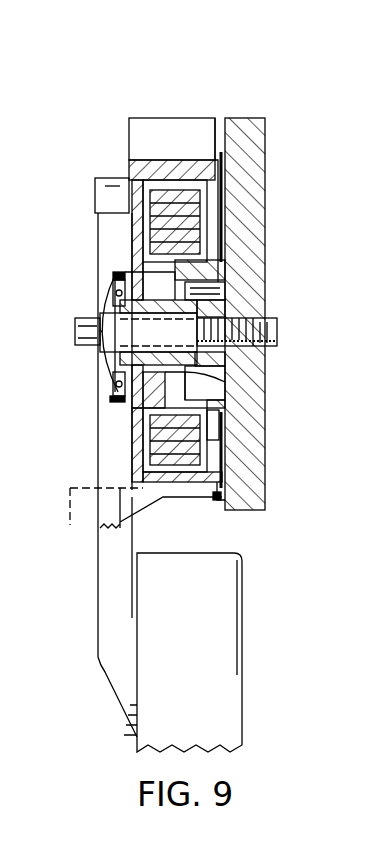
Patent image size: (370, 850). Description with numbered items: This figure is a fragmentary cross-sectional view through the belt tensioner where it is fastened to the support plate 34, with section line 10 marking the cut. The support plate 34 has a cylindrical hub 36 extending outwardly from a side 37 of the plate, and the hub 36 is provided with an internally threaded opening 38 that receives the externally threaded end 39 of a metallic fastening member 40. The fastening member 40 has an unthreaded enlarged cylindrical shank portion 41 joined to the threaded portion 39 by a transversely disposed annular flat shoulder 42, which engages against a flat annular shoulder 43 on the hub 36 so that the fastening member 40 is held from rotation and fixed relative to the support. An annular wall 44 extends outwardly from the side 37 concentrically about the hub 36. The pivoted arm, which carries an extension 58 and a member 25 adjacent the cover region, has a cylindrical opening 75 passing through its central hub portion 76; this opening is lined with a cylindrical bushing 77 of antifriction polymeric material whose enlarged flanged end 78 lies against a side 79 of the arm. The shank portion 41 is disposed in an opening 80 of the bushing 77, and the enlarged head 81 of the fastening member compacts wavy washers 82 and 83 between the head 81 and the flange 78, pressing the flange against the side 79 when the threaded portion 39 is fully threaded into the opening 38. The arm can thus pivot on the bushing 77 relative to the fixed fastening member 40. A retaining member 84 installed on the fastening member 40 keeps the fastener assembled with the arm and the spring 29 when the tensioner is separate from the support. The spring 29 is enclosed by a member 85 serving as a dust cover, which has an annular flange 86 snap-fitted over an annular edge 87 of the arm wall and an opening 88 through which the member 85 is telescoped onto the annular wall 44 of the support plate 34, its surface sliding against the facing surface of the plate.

The section line 10 is at (139, 147).
The support arm 25 is at (226, 703).
The spring 29 is at (150, 451).
The support plate 34 is at (255, 118).
The cylindrical hub 36 is at (255, 380).
The side of the plate 37 is at (222, 125).
The internally threaded opening 38 is at (279, 331).
The externally threaded end 39 is at (265, 358).
The fastening member 40 is at (90, 302).
The unthreaded enlarged cylindrical shank portion 41 is at (135, 334).
The annular flat shoulder 42 is at (245, 312).
The flat annular shoulder 43 is at (240, 290).
The annular wall 44 is at (225, 424).
The extension 58 is at (130, 137).
The cylindrical opening 75 is at (96, 320).
The central hub portion 76 is at (245, 396).
The cylindrical bushing 77 is at (148, 400).
The enlarged flanged end 78 is at (116, 282).
The side of the arm 79 is at (126, 232).
The opening of the bushing 80 is at (240, 270).
The enlarged head 81 is at (114, 300).
The wavy washer 82 is at (114, 375).
The wavy washer 83 is at (118, 384).
The retaining member 84 is at (122, 272).
The member 85 is at (232, 456).
The annular flange 86 is at (219, 500).
The annular edge 87 is at (226, 494).
The opening 88 is at (250, 240).